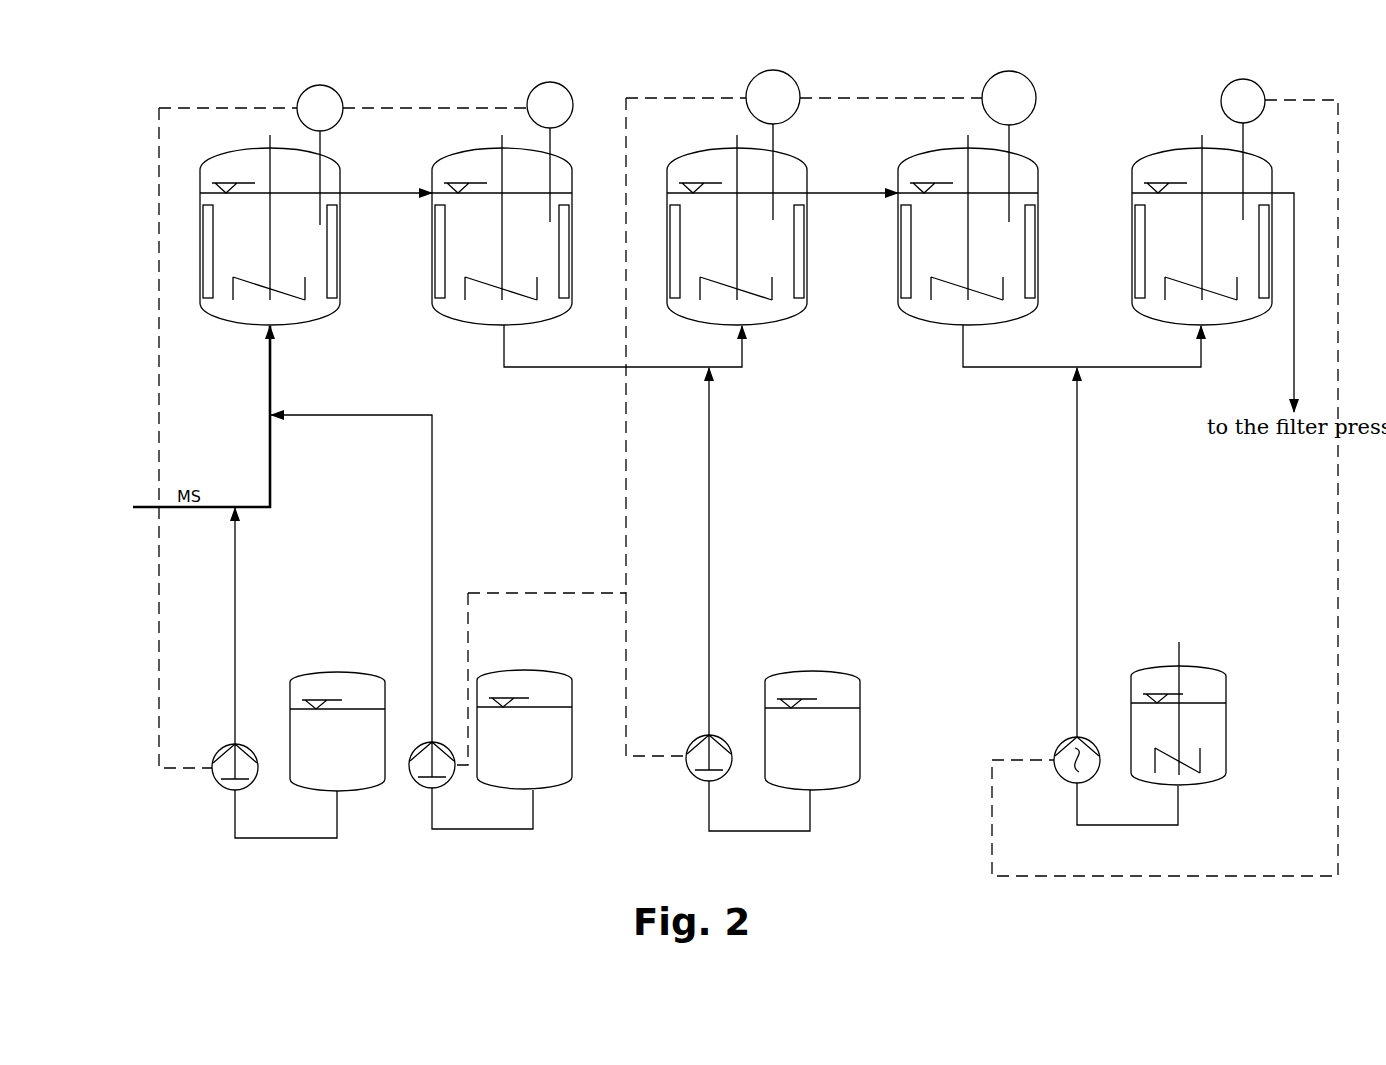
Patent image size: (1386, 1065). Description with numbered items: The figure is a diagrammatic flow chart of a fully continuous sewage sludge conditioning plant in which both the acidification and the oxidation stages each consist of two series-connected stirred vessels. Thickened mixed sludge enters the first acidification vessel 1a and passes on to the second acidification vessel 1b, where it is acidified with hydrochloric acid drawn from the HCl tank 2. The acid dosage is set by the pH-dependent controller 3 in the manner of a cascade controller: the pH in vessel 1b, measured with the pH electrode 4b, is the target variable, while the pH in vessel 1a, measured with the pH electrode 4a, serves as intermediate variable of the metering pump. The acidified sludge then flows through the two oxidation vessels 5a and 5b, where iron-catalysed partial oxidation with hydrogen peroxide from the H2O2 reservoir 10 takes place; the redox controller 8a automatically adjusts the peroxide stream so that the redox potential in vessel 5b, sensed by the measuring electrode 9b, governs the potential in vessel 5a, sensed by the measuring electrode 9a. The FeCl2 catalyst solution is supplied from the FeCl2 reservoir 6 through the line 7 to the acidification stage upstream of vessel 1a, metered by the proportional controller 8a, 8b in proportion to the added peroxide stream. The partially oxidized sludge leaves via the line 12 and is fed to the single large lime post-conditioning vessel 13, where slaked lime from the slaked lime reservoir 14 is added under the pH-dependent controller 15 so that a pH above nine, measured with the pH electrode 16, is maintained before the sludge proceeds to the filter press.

The first acidification reaction vessel 1a is at (294, 323).
The second acidification reaction vessel 1b is at (472, 317).
The HCl tank 2 is at (345, 795).
The pH-dependent controller 3 is at (158, 440).
The pH electrode of vessel 1a 4a is at (337, 90).
The pH electrode of vessel 1b 4b is at (568, 84).
The first oxidation reaction vessel 5a is at (752, 320).
The second oxidation reaction vessel 5b is at (942, 315).
The FeCl2 reservoir 6 is at (545, 792).
The FeCl2 line 7 is at (432, 558).
The redox controller 8a is at (626, 478).
The proportional FeCl2 controller 8b is at (495, 593).
The redox measuring electrode of vessel 5a 9a is at (795, 75).
The redox measuring electrode of vessel 5b 9b is at (1032, 80).
The H2O2 reservoir 10 is at (832, 792).
The line 12 is at (1022, 367).
The lime post-conditioning vessel 13 is at (1208, 325).
The slaked lime reservoir 14 is at (1195, 788).
The pH-dependent lime controller 15 is at (1333, 587).
The pH electrode of vessel 13 16 is at (1260, 78).